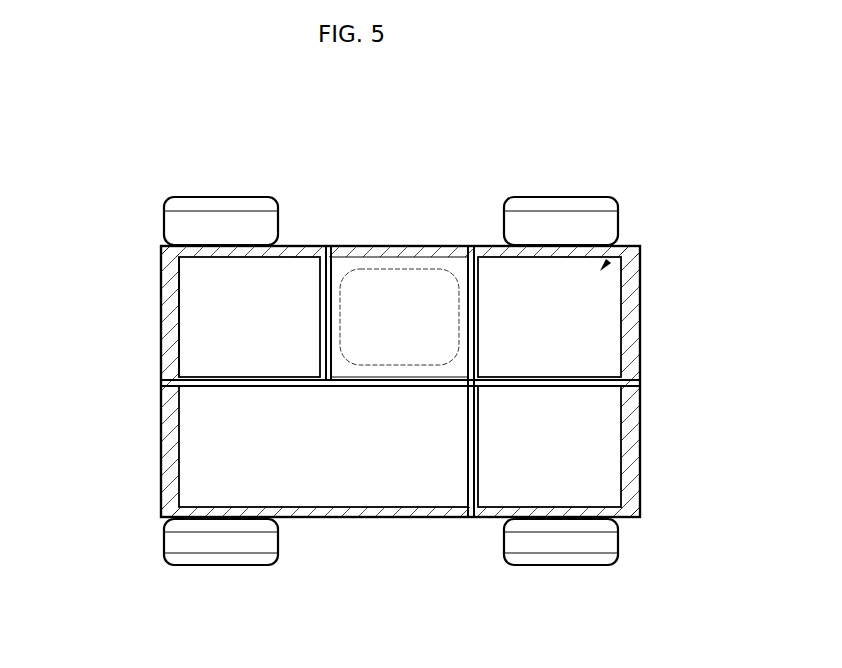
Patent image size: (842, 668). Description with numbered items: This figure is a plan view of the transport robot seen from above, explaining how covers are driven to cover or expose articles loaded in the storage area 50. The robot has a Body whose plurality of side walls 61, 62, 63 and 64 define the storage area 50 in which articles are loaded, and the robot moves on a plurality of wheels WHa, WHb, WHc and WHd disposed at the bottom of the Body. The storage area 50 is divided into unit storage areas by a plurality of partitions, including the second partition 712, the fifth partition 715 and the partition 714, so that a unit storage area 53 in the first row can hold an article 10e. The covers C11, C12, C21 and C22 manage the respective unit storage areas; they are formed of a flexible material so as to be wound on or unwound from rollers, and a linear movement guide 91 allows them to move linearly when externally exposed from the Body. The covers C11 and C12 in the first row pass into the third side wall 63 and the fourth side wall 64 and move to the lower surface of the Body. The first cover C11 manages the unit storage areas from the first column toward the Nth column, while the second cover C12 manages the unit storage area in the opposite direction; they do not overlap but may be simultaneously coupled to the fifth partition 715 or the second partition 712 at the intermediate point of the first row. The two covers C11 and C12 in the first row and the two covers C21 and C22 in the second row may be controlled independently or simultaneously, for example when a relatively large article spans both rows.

The body Body is at (96, 176).
The storage area 50 is at (622, 246).
The first side wall 61 is at (305, 250).
The second side wall 62 is at (400, 518).
The third side wall 63 is at (160, 315).
The fourth side wall 64 is at (640, 275).
The linear movement guide 91 is at (172, 275).
The first cover C11 is at (212, 350).
The second cover C12 is at (593, 333).
The cover C21 is at (212, 460).
The cover C22 is at (593, 448).
The second partition 712 is at (327, 245).
The fifth partition 715 is at (471, 245).
The partition 714 is at (178, 390).
The unit storage area 53 is at (414, 262).
The article 10e is at (373, 285).
The wheel WHa is at (215, 557).
The wheel WHb is at (216, 205).
The wheel WHc is at (565, 557).
The wheel WHd is at (565, 205).